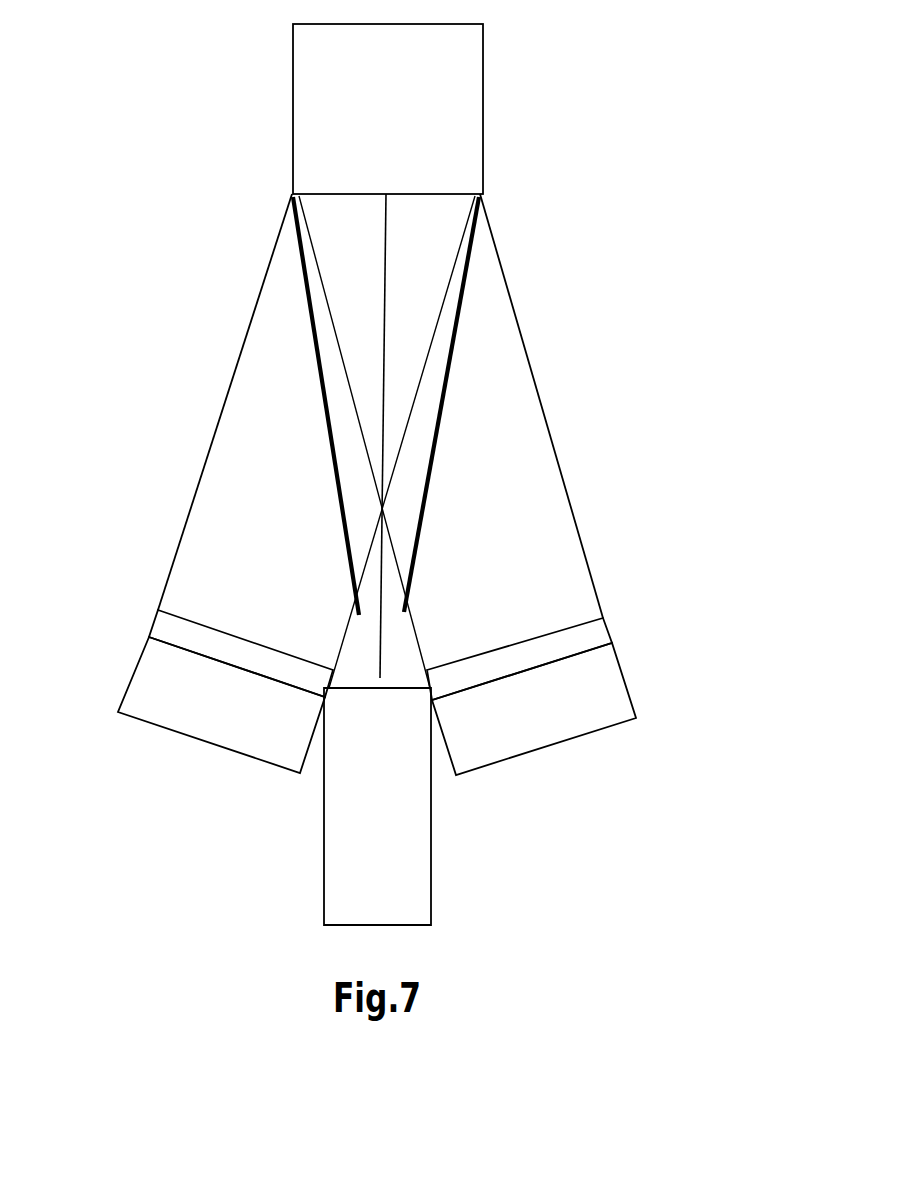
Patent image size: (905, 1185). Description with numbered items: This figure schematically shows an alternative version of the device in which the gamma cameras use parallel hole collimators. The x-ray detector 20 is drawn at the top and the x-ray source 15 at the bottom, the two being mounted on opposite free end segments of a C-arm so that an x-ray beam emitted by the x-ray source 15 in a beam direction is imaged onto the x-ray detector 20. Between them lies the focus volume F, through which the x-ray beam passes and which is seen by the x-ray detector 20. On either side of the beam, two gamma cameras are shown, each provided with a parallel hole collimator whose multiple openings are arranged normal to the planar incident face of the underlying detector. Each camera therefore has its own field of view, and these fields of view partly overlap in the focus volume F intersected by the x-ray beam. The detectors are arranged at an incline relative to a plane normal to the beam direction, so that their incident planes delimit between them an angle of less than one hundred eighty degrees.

The x-ray detector 20 is at (483, 92).
The x-ray source 15 is at (402, 878).
The focus volume F is at (357, 315).